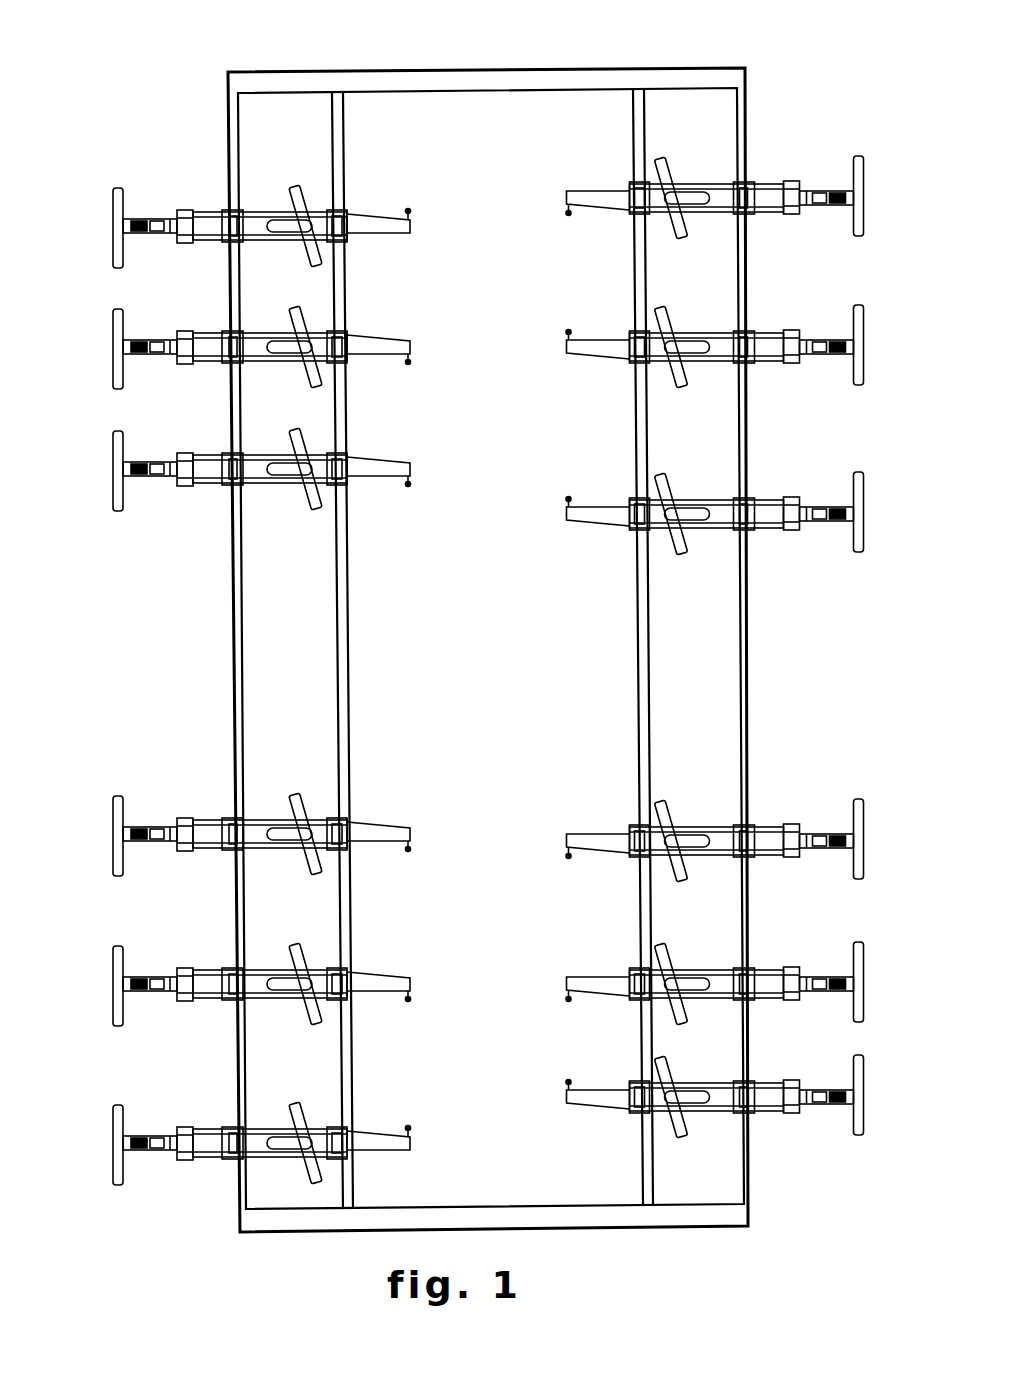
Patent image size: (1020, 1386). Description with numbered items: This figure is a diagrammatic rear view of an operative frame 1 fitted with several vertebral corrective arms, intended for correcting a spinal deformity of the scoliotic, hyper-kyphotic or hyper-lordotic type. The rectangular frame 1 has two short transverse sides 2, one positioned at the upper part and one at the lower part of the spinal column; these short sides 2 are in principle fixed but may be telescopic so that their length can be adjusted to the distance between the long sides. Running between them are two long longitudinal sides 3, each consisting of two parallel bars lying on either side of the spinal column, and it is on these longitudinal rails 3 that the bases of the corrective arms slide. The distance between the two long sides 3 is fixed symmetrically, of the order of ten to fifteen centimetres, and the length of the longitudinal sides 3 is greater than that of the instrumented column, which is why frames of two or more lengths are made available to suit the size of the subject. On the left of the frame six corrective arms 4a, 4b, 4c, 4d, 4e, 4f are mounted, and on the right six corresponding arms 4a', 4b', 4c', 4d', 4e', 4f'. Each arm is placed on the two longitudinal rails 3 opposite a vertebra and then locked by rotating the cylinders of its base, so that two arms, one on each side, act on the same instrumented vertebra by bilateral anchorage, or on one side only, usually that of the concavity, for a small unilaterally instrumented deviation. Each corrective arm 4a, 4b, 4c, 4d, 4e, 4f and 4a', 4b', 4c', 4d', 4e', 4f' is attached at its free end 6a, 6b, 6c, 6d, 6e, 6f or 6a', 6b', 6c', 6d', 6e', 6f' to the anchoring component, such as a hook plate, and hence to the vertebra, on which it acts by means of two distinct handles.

The operative frame 1 is at (333, 160).
The short transverse side 2 is at (637, 76).
The long longitudinal side 3 is at (335, 663).
The corrective arm 4a is at (197, 222).
The corrective arm 4b is at (197, 337).
The corrective arm 4c is at (199, 462).
The corrective arm 4d is at (216, 797).
The corrective arm 4e is at (203, 957).
The corrective arm 4f is at (203, 1117).
The corrective arm 4a' is at (768, 164).
The corrective arm 4b' is at (747, 317).
The corrective arm 4c' is at (749, 483).
The corrective arm 4d' is at (747, 772).
The corrective arm 4e' is at (749, 961).
The corrective arm 4f' is at (747, 1082).
The free end 6a is at (379, 181).
The free end 6b is at (382, 314).
The free end 6c is at (381, 516).
The free end 6d is at (384, 788).
The free end 6e is at (383, 942).
The free end 6f is at (383, 1086).
The free end 6a' is at (596, 170).
The free end 6b' is at (598, 304).
The free end 6c' is at (598, 476).
The free end 6d' is at (598, 804).
The free end 6e' is at (598, 954).
The free end 6f' is at (598, 1136).